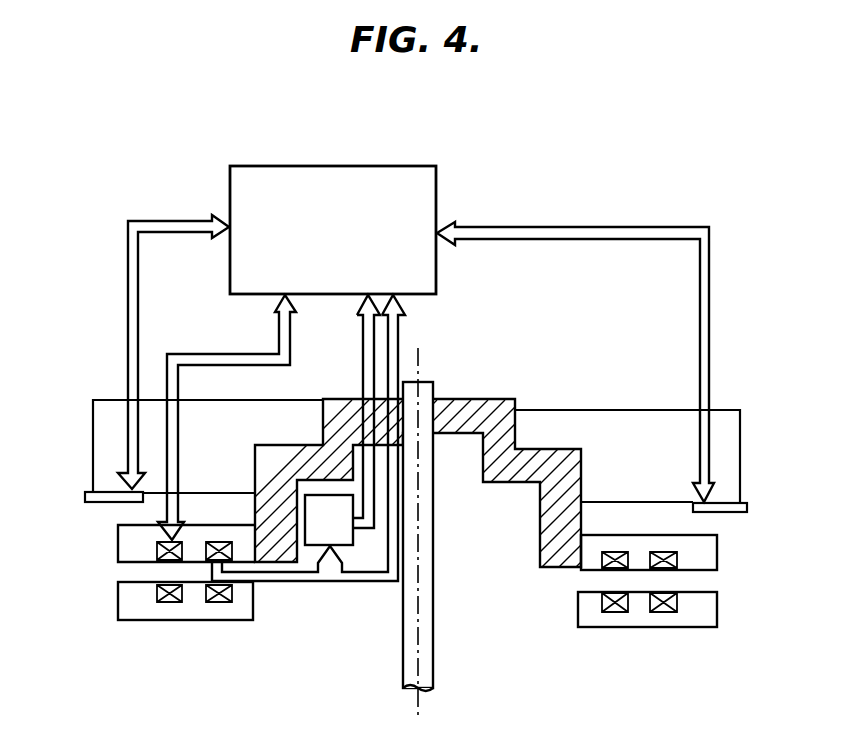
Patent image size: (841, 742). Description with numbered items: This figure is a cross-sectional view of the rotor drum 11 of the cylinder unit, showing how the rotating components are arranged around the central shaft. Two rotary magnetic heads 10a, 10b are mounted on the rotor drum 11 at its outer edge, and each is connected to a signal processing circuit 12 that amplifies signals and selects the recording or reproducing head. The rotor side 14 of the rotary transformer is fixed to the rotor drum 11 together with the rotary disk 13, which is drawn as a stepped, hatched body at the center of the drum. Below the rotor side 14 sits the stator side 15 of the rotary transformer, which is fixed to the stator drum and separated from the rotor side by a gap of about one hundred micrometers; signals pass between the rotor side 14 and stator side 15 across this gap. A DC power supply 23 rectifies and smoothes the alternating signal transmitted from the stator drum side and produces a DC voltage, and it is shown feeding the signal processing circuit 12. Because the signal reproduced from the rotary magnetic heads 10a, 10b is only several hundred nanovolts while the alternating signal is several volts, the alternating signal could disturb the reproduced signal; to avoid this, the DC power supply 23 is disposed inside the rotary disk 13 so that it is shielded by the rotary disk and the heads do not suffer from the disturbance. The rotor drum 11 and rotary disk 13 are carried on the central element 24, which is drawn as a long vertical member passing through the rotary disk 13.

The rotary magnetic head 10a is at (749, 505).
The rotary magnetic head 10b is at (86, 499).
The rotor drum 11 is at (727, 410).
The signal processing circuit 12 is at (437, 187).
The rotary disk 13 is at (474, 399).
The rotor side of rotary transformer 14 is at (718, 563).
The stator side of rotary transformer 15 is at (718, 625).
The DC power supply 23 is at (311, 548).
The shaft 24 is at (400, 665).